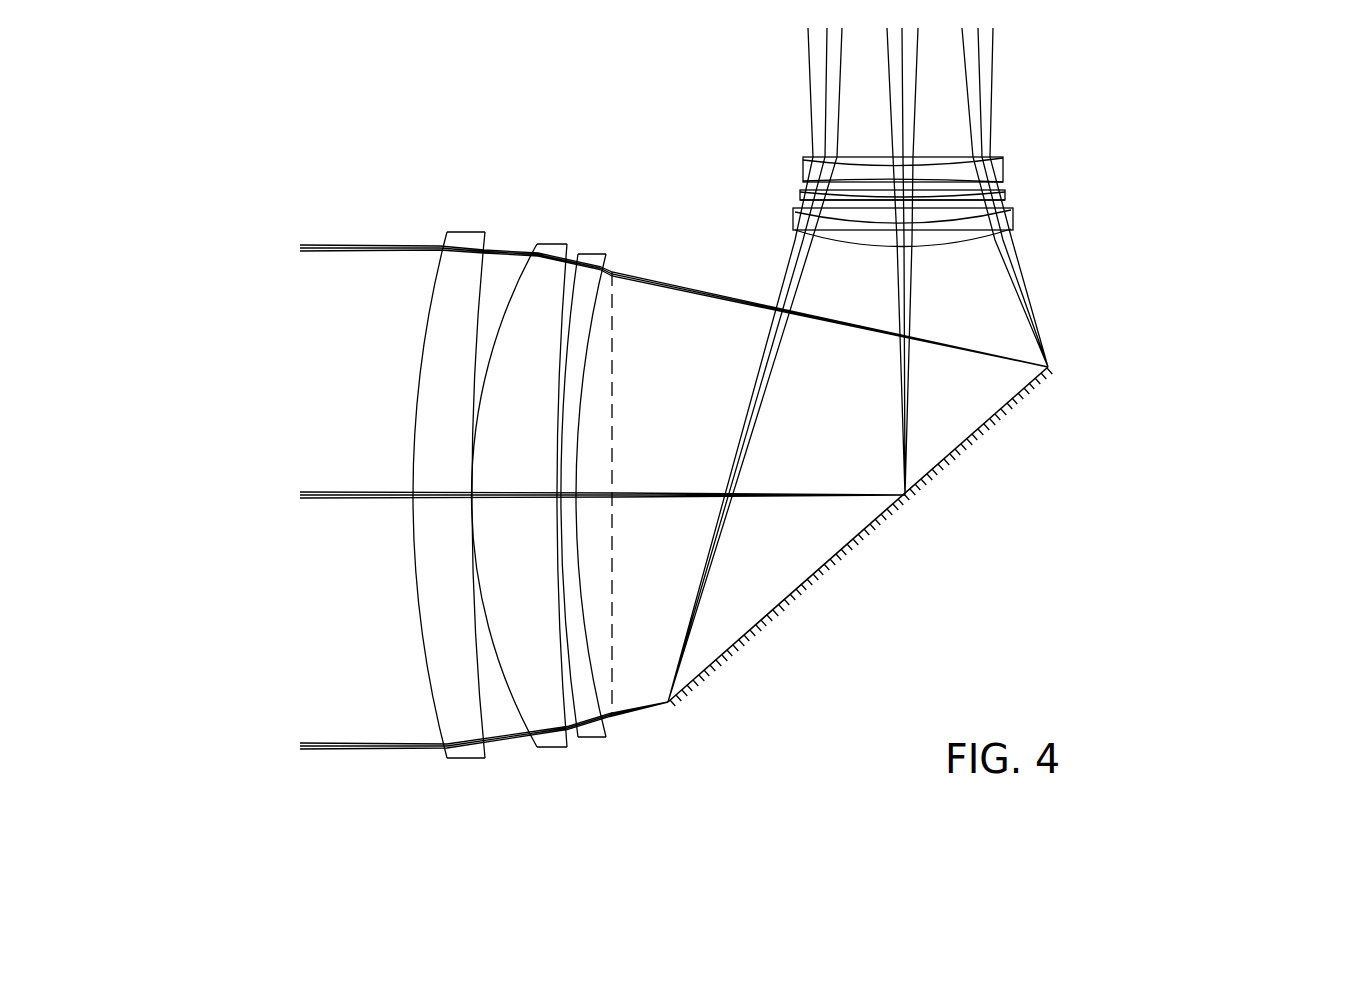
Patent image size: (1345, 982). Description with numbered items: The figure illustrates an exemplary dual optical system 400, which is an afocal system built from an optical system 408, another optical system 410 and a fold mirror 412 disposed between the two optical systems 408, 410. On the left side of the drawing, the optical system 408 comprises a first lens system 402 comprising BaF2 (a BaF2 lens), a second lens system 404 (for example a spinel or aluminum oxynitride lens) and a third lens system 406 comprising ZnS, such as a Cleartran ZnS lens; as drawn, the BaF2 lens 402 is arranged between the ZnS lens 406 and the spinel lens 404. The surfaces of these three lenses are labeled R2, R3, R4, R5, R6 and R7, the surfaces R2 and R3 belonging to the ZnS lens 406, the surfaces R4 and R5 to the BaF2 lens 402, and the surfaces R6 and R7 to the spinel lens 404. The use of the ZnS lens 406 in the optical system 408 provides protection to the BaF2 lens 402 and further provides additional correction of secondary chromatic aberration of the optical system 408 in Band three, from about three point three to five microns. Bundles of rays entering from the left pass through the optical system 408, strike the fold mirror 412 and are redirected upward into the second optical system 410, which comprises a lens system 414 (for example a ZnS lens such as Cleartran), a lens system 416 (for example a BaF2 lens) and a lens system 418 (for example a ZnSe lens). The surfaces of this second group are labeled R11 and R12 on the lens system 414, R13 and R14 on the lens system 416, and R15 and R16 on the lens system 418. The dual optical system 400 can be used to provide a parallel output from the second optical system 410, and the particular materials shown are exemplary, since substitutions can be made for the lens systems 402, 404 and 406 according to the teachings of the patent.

The dual optical system 400 is at (418, 108).
The first lens system 402 is at (558, 748).
The second lens system 404 is at (597, 737).
The third lens system 406 is at (435, 598).
The optical system 408 is at (612, 228).
The second optical system 410 is at (768, 148).
The fold mirror 412 is at (855, 546).
The lens system 414 is at (1013, 224).
The lens system 416 is at (1005, 193).
The lens system 418 is at (1003, 170).
The lens surface R2 is at (418, 383).
The lens surface R3 is at (472, 378).
The lens surface R4 is at (517, 287).
The lens surface R5 is at (558, 353).
The lens surface R6 is at (565, 603).
The lens surface R7 is at (592, 657).
The lens surface R11 is at (827, 240).
The lens surface R12 is at (862, 228).
The lens surface R13 is at (940, 222).
The lens surface R14 is at (967, 193).
The lens surface R15 is at (850, 177).
The lens surface R16 is at (865, 162).